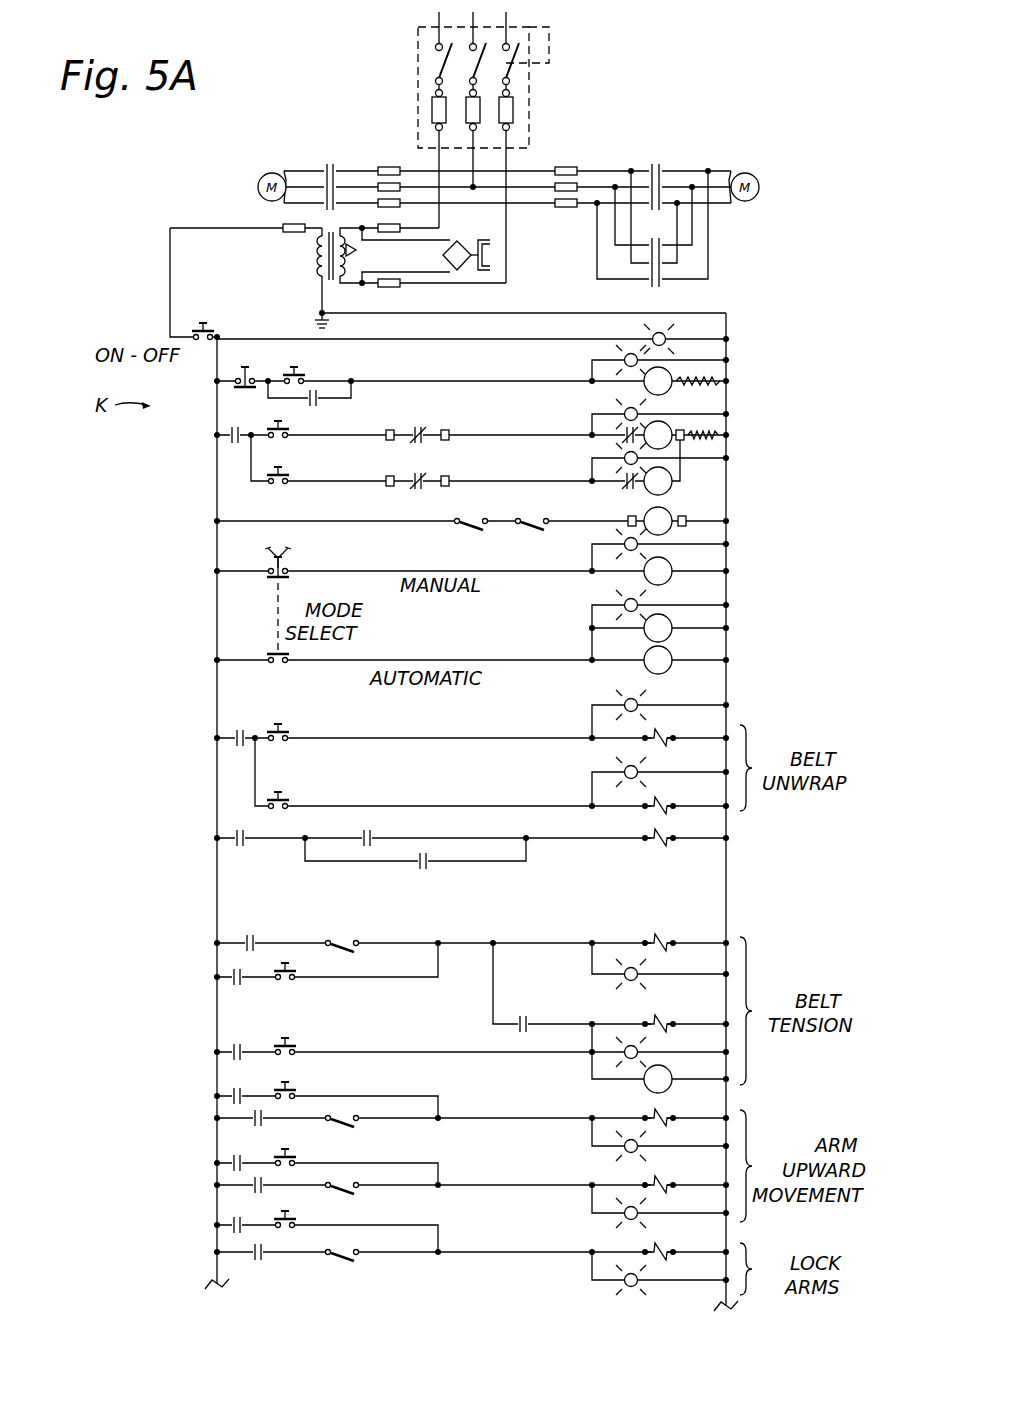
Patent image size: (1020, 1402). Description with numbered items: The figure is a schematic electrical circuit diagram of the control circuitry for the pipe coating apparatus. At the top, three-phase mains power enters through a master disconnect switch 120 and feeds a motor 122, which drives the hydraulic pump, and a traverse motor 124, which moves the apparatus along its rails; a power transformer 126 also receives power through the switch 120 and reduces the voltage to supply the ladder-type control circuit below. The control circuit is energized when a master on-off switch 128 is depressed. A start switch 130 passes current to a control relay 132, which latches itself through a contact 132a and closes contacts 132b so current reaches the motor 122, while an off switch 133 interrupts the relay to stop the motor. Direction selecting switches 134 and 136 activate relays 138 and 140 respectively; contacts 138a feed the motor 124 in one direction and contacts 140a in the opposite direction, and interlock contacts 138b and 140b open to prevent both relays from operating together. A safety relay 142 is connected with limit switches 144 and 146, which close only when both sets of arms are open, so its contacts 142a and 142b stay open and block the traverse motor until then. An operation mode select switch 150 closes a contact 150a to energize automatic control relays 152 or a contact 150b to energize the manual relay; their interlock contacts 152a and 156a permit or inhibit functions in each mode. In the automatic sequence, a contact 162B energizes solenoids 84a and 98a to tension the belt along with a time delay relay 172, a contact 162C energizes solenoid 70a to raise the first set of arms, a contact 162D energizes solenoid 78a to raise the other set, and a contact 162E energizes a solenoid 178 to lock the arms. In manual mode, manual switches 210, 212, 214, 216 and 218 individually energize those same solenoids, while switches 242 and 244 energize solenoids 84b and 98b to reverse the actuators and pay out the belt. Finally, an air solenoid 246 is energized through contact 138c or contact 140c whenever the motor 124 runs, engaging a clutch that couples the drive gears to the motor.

The master disconnect switch 120 is at (535, 104).
The motor 122 is at (258, 180).
The traverse motor 124 is at (757, 178).
The power transformer 126 is at (305, 258).
The master on-off switch 128 is at (208, 330).
The start switch 130 is at (305, 372).
The control relay 132 is at (672, 386).
The contact 132a is at (313, 406).
The contacts 132b is at (328, 163).
The off switch 133 is at (250, 368).
The direction selecting switch 134 is at (288, 440).
The direction selecting switch 136 is at (288, 486).
The relay 138 is at (672, 428).
The contacts 138a is at (655, 163).
The contact 138b is at (625, 487).
The contact 138c is at (370, 830).
The relay 140 is at (672, 487).
The contacts 140a is at (656, 289).
The contact 140b is at (624, 440).
The contact 140c is at (423, 869).
The safety relay 142 is at (672, 514).
The contact 142a is at (419, 426).
The contact 142b is at (419, 472).
The limit switch 144 is at (458, 528).
The limit switch 146 is at (530, 528).
The operation mode select switch 150 is at (292, 560).
The contact 150a is at (266, 657).
The contact 150b is at (266, 574).
The automatic control relays 152 is at (672, 657).
The automatic interlock control contacts 152a is at (250, 934).
The manual interlock control contacts 156a is at (240, 749).
The switch 242 is at (292, 732).
The switch 244 is at (292, 799).
The solenoid 84b is at (660, 746).
The solenoid 98b is at (662, 814).
The air solenoid 246 is at (664, 847).
The contact 162B is at (340, 934).
The contact 162C is at (362, 1126).
The contact 162D is at (362, 1193).
The contact 162E is at (365, 1260).
The manual switch 210 is at (292, 984).
The manual switch 212 is at (298, 1046).
The manual switch 214 is at (298, 1090).
The switch 216 is at (298, 1160).
The manual switch 218 is at (298, 1222).
The solenoid 84a is at (652, 932).
The solenoid 98a is at (654, 1016).
The time delay relay 172 is at (645, 1088).
The solenoid 70a is at (658, 1112).
The solenoid 78a is at (658, 1179).
The solenoid 178 is at (658, 1246).